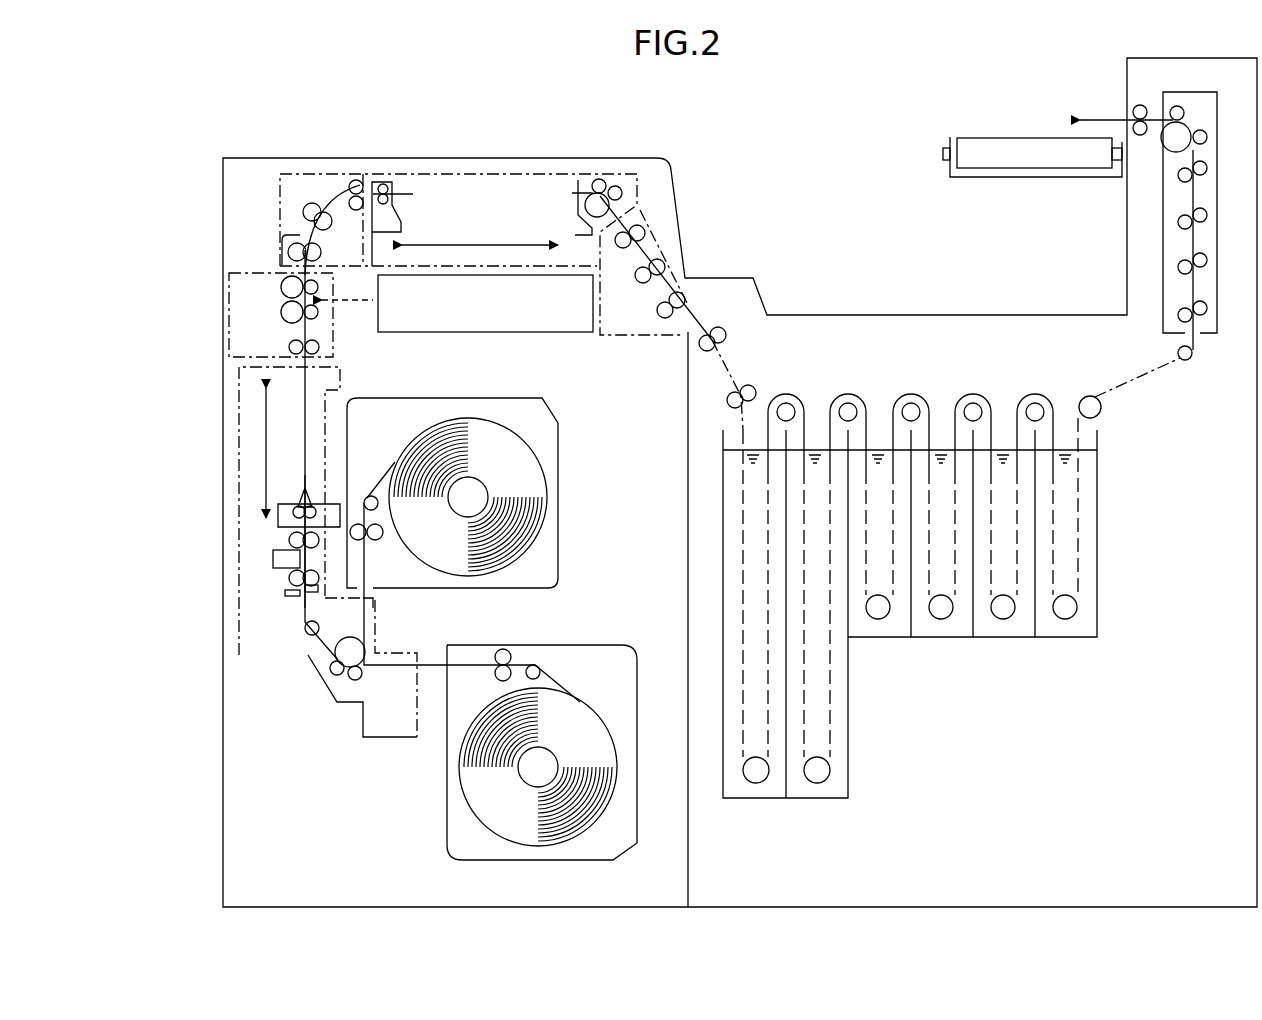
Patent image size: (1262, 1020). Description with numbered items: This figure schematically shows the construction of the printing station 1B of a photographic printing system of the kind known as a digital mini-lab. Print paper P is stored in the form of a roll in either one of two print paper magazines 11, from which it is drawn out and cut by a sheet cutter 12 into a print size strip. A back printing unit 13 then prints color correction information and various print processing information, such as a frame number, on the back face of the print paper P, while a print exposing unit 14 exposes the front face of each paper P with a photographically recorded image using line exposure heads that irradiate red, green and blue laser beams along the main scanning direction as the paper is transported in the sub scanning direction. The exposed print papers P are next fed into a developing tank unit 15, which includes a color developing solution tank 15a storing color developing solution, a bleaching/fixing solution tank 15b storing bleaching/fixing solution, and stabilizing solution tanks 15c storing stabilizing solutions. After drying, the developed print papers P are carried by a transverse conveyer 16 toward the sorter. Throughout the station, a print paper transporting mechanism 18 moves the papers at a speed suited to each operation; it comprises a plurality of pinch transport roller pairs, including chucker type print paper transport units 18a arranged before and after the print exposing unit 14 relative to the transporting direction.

The printing station 1B is at (170, 150).
The print paper magazine 11 is at (558, 543).
The sheet cutter 12 is at (283, 593).
The back printing unit 13 is at (273, 555).
The print exposing unit 14 is at (517, 320).
The developing tank unit 15 is at (992, 712).
The color developing solution tank 15a is at (762, 788).
The bleaching/fixing solution tank 15b is at (837, 787).
The stabilizing solution tanks 15c is at (1067, 627).
The transverse conveyer 16 is at (995, 143).
The print paper transporting mechanism 18 is at (297, 208).
The chucker type print paper transport unit 18a is at (507, 165).
The print paper P is at (282, 243).